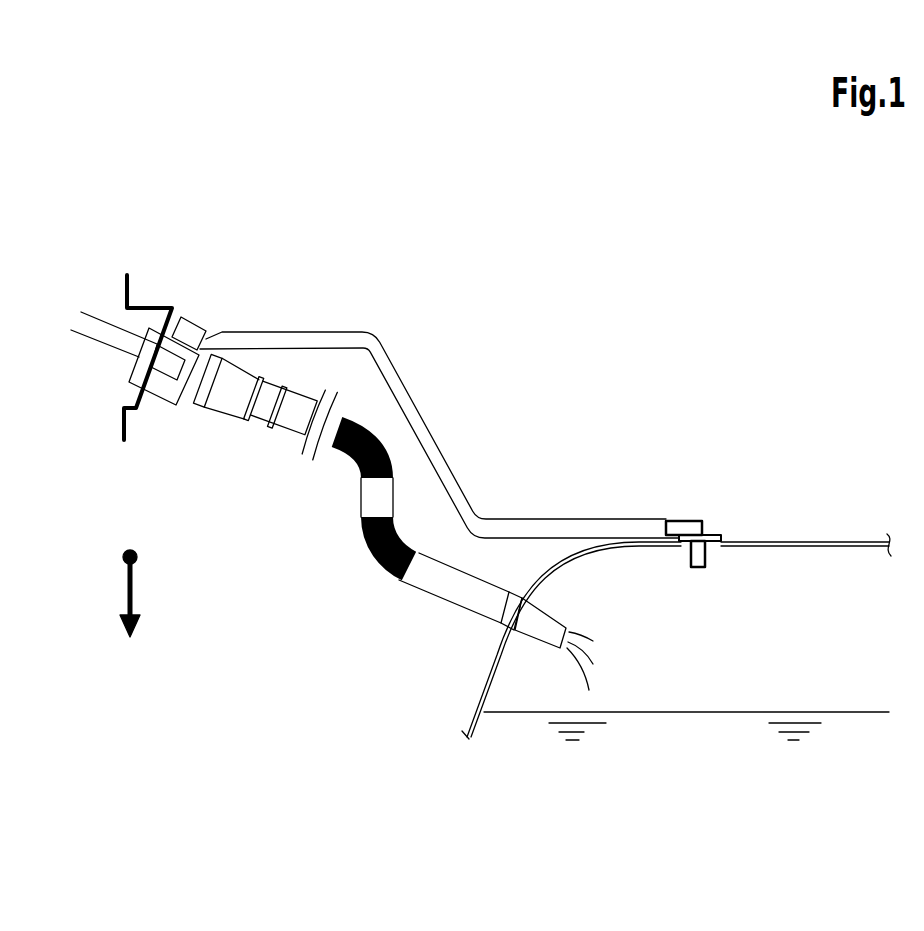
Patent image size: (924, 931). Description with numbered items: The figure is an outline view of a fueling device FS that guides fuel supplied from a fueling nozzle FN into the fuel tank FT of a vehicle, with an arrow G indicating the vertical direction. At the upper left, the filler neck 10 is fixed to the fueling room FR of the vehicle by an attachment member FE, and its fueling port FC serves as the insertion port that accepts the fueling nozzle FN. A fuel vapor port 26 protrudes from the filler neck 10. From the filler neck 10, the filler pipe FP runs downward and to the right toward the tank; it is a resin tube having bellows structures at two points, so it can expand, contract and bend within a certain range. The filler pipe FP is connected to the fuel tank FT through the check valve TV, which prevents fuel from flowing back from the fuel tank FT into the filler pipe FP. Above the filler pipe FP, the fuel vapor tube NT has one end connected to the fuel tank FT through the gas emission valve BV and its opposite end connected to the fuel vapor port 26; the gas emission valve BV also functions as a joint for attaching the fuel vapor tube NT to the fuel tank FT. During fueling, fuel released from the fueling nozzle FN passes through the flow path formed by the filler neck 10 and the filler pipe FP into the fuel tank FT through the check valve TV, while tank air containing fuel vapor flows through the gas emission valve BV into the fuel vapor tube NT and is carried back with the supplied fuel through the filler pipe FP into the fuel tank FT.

The fueling device FS is at (323, 258).
The fueling nozzle FN is at (110, 323).
The fueling room FR is at (156, 322).
The fuel vapor port 26 is at (187, 340).
The attachment member FE is at (197, 347).
The fueling port FC is at (131, 366).
The filler neck 10 is at (190, 400).
The filler pipe FP is at (368, 495).
The fuel vapor tube NT is at (582, 518).
The gas emission valve BV is at (692, 520).
The fuel tank FT is at (842, 540).
The check valve TV is at (565, 645).
The arrow G is at (130, 612).